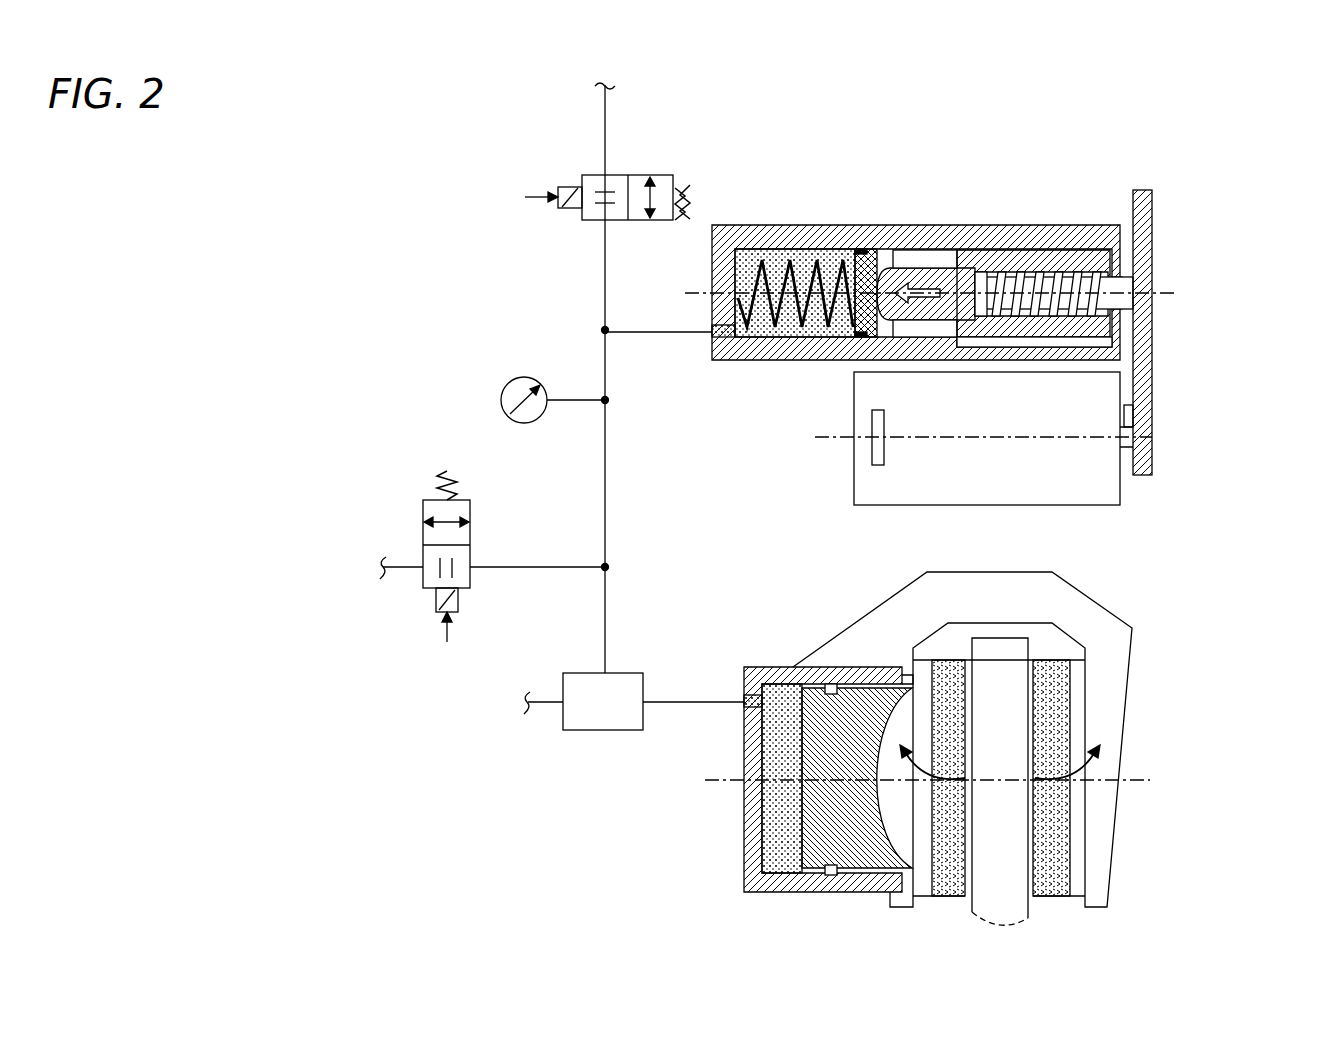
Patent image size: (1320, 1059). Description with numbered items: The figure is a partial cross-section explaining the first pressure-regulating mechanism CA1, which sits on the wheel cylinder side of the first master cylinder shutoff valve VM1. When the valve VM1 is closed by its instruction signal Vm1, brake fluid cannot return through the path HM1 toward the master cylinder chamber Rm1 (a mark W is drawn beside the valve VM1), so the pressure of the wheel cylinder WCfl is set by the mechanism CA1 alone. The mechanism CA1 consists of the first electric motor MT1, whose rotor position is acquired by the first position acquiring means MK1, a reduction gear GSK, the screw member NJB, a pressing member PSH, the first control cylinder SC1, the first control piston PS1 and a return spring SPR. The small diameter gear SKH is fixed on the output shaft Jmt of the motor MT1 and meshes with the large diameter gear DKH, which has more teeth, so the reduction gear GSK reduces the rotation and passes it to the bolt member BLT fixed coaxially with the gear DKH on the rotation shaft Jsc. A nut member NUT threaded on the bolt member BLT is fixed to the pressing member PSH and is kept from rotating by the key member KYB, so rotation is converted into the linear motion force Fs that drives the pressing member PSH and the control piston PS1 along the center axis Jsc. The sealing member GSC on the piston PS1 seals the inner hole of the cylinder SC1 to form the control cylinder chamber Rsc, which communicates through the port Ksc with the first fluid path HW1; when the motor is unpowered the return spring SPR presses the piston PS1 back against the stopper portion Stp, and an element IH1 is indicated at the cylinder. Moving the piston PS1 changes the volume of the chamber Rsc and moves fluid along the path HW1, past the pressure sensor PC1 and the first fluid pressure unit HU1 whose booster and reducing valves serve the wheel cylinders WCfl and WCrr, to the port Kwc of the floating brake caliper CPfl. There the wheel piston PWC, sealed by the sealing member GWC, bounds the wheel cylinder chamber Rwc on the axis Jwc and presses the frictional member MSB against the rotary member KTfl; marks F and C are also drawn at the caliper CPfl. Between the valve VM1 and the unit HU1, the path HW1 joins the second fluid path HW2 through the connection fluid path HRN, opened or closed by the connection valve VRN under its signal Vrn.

The master cylinder chamber Rm1 is at (604, 71).
The master cylinder fluid path (H1) HM1 is at (595, 86).
The first master cylinder shutoff valve VM1 is at (627, 183).
The instruction signal Vm1 is at (526, 197).
The return spring of valve W is at (689, 202).
The first pressure-regulating mechanism CA1 is at (1118, 148).
The rotation-linear motion converting mechanism (screw member) NJB is at (1100, 190).
The bolt member BLT is at (1018, 250).
The nut member NUT is at (1085, 250).
The sealing member GSC is at (849, 247).
The stopper portion Stp is at (878, 250).
The first control piston PS1 is at (867, 249).
The pressing member PSH is at (926, 267).
The control cylinder chamber Rsc is at (744, 263).
The rotation shaft / center axis Jsc is at (679, 293).
The port Ksc is at (710, 323).
The linear motion force Fs is at (931, 293).
The first control cylinder SC1 is at (735, 361).
The return spring SPR is at (808, 340).
The stroke sensor IH1 is at (862, 340).
The key member KYB is at (1103, 341).
The large diameter gear DKH is at (1140, 385).
The small diameter gear SKH is at (1133, 417).
The reduction gear GSK is at (1228, 375).
The first position acquiring means MK1 is at (884, 410).
The output shaft Jmt is at (817, 434).
The first electric motor MT1 is at (1040, 506).
The first control cylinder fluid pressure acquiring means PC1 is at (553, 386).
The first fluid path (brake piping) HW1 is at (606, 517).
The connection fluid path HRN is at (545, 567).
The connection valve VRN is at (446, 531).
The second fluid path (brake piping) HW2 is at (370, 582).
The instruction signal Vrn is at (446, 641).
The wheel cylinder WCrr is at (510, 703).
The first fluid pressure unit HU1 is at (603, 701).
The port Kwc is at (745, 693).
The wheel cylinder chamber Rwc is at (770, 690).
The wheel cylinder axis Jwc is at (707, 779).
The wheel cylinder WCfl is at (784, 783).
The sealing member GWC is at (830, 876).
The wheel piston PWC is at (885, 872).
The frictional member MSB is at (948, 897).
The rotary member KTfl is at (1000, 925).
The brake caliper CPfl is at (1133, 710).
The rotation direction mark C is at (993, 597).
The friction force F is at (1001, 752).